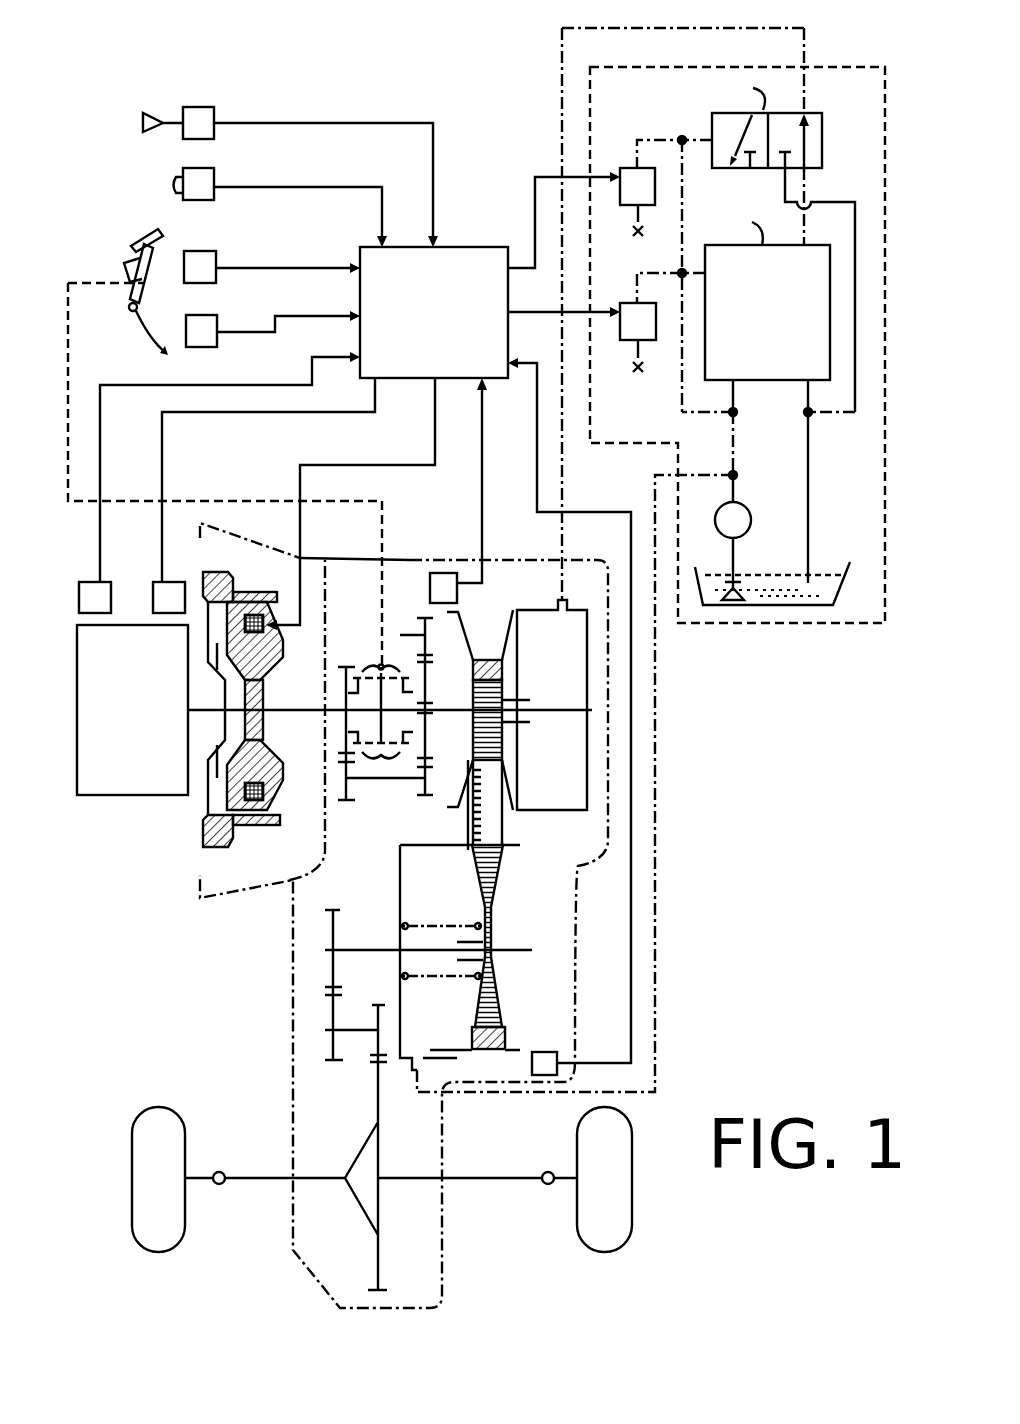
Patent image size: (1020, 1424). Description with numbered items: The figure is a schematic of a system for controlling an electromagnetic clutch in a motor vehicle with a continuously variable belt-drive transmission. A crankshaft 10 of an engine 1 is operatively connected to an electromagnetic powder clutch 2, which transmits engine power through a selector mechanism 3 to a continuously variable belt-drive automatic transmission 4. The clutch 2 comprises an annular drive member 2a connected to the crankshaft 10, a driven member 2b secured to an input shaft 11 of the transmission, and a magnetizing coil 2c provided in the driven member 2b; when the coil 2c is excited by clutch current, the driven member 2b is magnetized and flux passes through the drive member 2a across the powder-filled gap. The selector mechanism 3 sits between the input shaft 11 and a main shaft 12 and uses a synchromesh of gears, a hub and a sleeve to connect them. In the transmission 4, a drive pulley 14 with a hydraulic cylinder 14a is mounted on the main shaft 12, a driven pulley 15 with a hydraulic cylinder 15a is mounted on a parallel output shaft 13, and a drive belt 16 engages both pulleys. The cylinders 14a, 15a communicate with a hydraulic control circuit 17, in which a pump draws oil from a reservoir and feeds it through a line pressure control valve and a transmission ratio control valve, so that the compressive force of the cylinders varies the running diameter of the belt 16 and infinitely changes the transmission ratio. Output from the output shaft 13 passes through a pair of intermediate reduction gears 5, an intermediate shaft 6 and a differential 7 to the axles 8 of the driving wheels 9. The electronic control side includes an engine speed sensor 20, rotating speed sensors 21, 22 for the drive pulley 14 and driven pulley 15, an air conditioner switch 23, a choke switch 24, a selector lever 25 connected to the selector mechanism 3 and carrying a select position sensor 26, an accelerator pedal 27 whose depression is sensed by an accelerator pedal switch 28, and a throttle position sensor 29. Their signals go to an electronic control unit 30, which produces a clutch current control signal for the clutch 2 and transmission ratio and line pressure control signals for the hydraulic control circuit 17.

The engine 1 is at (112, 797).
The electromagnetic powder clutch 2 is at (233, 699).
The annular drive member 2a is at (197, 590).
The driven member 2b is at (265, 658).
The magnetizing coil 2c is at (260, 608).
The selector mechanism 3 is at (365, 656).
The continuously variable belt-drive automatic transmission 4 is at (518, 590).
The intermediate reduction gears 5 is at (357, 889).
The intermediate shaft 6 is at (353, 1023).
The differential 7 is at (365, 1168).
The axles 8 is at (272, 1157).
The vehicle driving wheels 9 is at (175, 1222).
The crankshaft 10 is at (193, 712).
The input shaft 11 is at (290, 712).
The main shaft 12 is at (455, 712).
The output shaft 13 is at (357, 948).
The drive pulley 14 is at (463, 640).
The hydraulic cylinder 14a is at (562, 770).
The driven pulley 15 is at (503, 862).
The hydraulic cylinder 15a is at (420, 872).
The drive belt 16 is at (468, 830).
The hydraulic control circuit 17 is at (845, 77).
The engine speed sensor 20 is at (152, 583).
The rotating speed sensor 21 is at (430, 588).
The rotating speed sensor 22 is at (553, 1033).
The air conditioner switch 23 is at (214, 174).
The choke switch 24 is at (214, 113).
The selector lever 25 is at (133, 233).
The select position sensor 26 is at (216, 264).
The accelerator pedal 27 is at (148, 343).
The accelerator pedal switch 28 is at (217, 327).
The throttle position sensor 29 is at (87, 580).
The electronic control unit 30 is at (408, 378).